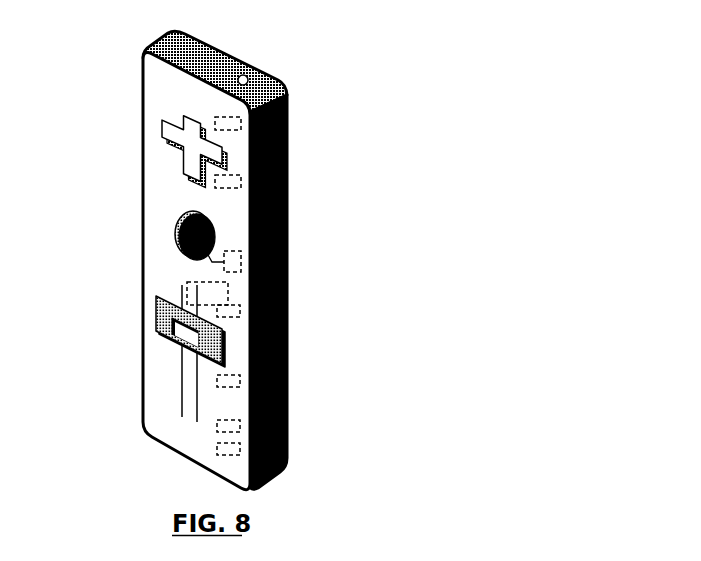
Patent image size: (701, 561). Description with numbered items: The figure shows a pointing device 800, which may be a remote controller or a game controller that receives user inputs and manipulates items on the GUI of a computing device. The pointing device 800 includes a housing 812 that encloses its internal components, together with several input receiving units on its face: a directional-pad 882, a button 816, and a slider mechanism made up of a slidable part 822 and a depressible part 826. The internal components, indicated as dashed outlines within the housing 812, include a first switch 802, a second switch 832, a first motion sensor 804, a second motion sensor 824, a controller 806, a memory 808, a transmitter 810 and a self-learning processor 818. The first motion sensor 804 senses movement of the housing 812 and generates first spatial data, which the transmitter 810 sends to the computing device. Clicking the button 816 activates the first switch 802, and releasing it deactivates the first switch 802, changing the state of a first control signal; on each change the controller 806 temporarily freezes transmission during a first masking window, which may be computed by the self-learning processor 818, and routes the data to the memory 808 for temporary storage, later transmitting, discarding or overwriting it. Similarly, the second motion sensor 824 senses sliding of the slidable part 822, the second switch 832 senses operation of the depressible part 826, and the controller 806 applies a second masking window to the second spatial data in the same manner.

The pointing device 800 is at (343, 248).
The housing 812 is at (145, 52).
The transmitter 810 is at (245, 76).
The directional-pad 882 is at (162, 134).
The first motion sensor 804 is at (241, 121).
The controller 806 is at (241, 179).
The button 816 is at (174, 236).
The first switch 802 is at (241, 256).
The second switch 832 is at (240, 309).
The second motion sensor 824 is at (240, 378).
The memory 808 is at (240, 423).
The self-learning processor 818 is at (240, 446).
The depressible part 826 is at (157, 314).
The slidable part 822 is at (168, 342).